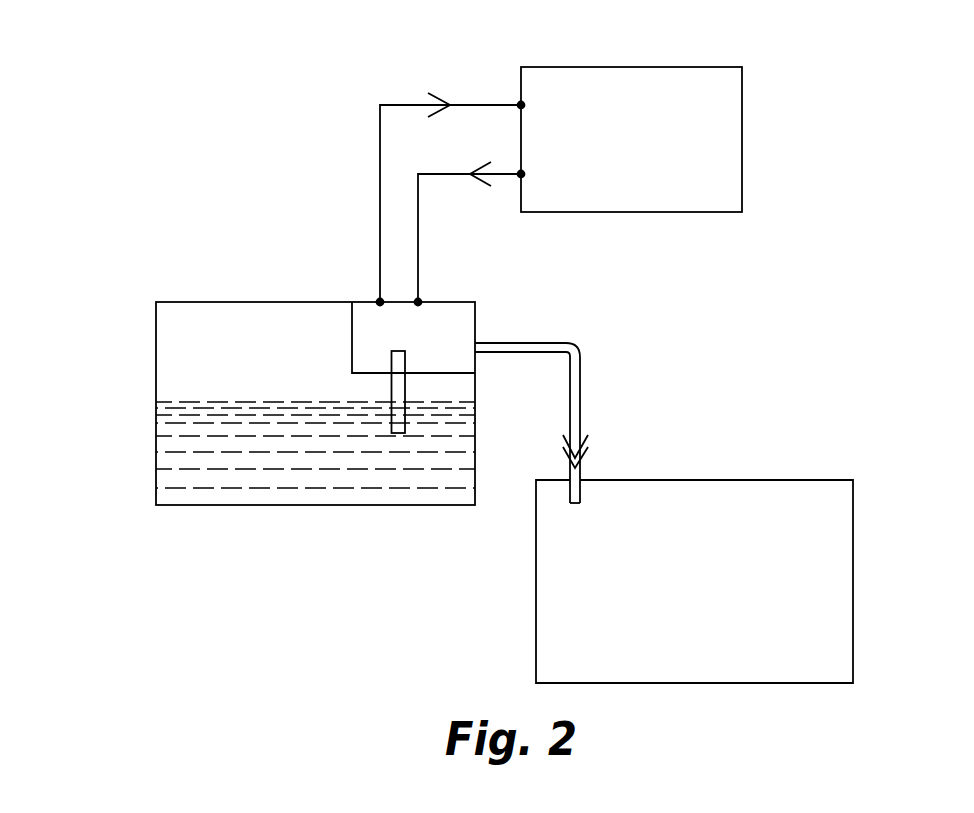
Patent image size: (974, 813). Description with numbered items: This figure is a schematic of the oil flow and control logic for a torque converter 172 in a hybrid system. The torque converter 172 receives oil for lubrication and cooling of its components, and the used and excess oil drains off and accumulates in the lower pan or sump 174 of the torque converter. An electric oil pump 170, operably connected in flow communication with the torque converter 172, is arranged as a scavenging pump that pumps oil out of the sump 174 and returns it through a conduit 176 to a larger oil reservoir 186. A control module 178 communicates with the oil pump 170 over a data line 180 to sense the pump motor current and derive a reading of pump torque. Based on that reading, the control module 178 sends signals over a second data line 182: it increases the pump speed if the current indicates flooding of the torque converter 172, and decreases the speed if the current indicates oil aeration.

The electric oil pump 170 is at (458, 323).
The torque converter 172 is at (270, 348).
The sump 174 is at (192, 387).
The conduit 176 is at (582, 407).
The control module 178 is at (707, 103).
The data line 180 is at (380, 143).
The data line 182 is at (418, 258).
The oil reservoir 186 is at (799, 570).